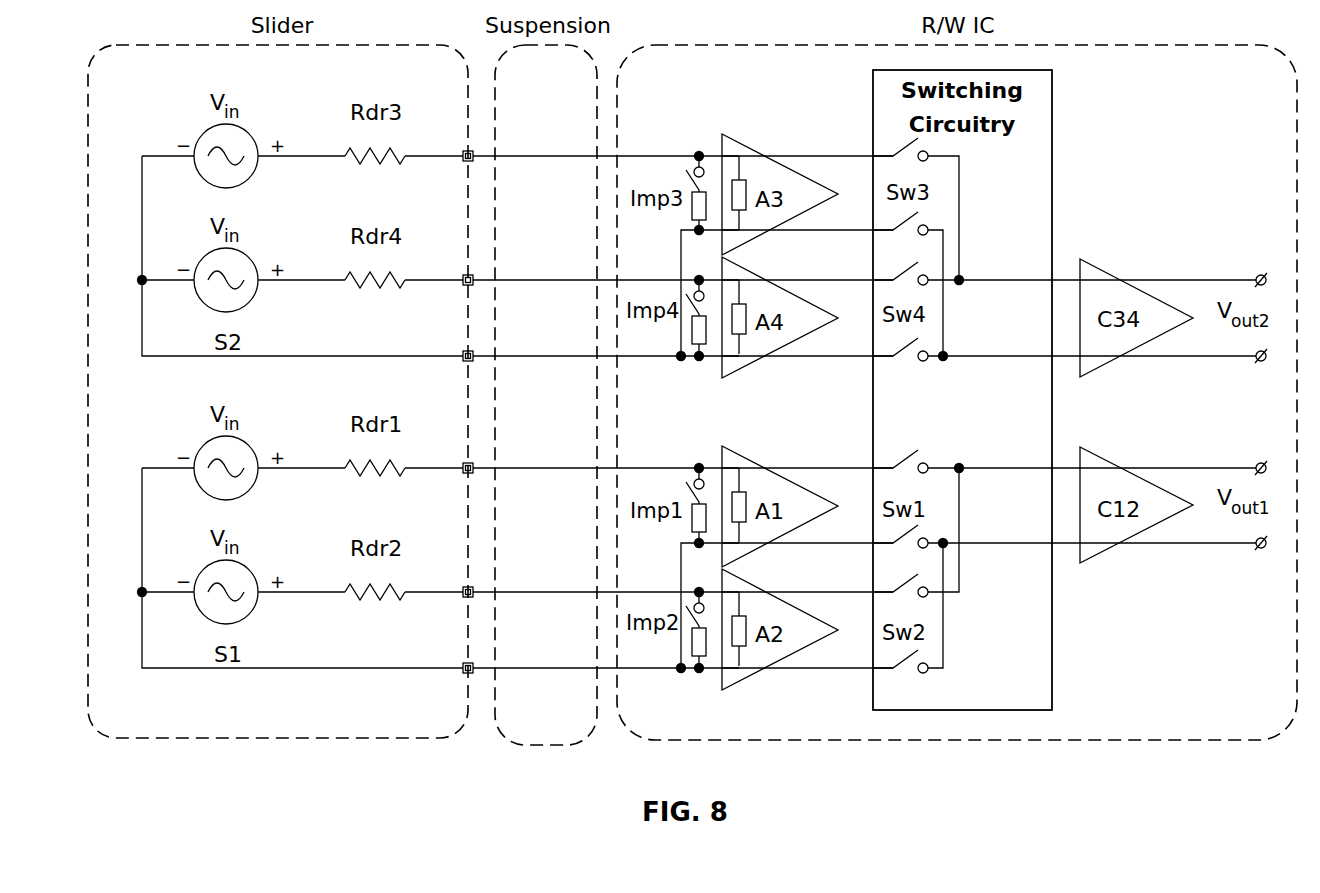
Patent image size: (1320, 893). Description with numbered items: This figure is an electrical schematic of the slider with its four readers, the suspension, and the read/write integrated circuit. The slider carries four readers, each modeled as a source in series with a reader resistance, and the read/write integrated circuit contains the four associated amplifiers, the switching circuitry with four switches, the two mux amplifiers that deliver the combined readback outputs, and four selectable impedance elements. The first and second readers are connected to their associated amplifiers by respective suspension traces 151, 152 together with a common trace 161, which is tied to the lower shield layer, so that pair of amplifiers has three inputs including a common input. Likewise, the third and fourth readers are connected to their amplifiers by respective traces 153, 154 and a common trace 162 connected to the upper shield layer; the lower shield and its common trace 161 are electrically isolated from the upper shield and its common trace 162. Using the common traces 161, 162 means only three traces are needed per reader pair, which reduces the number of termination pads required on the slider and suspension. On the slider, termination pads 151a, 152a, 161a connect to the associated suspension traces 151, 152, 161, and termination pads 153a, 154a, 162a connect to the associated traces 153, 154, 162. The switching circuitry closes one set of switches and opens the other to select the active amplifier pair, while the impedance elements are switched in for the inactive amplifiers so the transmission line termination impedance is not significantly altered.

The trace 151 is at (522, 468).
The trace 152 is at (522, 592).
The trace 153 is at (522, 156).
The trace 154 is at (522, 280).
The common trace 161 is at (522, 668).
The common trace 162 is at (522, 356).
The slider termination pad 151a is at (466, 478).
The slider termination pad 152a is at (466, 602).
The slider termination pad 153a is at (466, 166).
The slider termination pad 154a is at (466, 290).
The slider termination pad 161a is at (466, 678).
The slider termination pad 162a is at (466, 366).